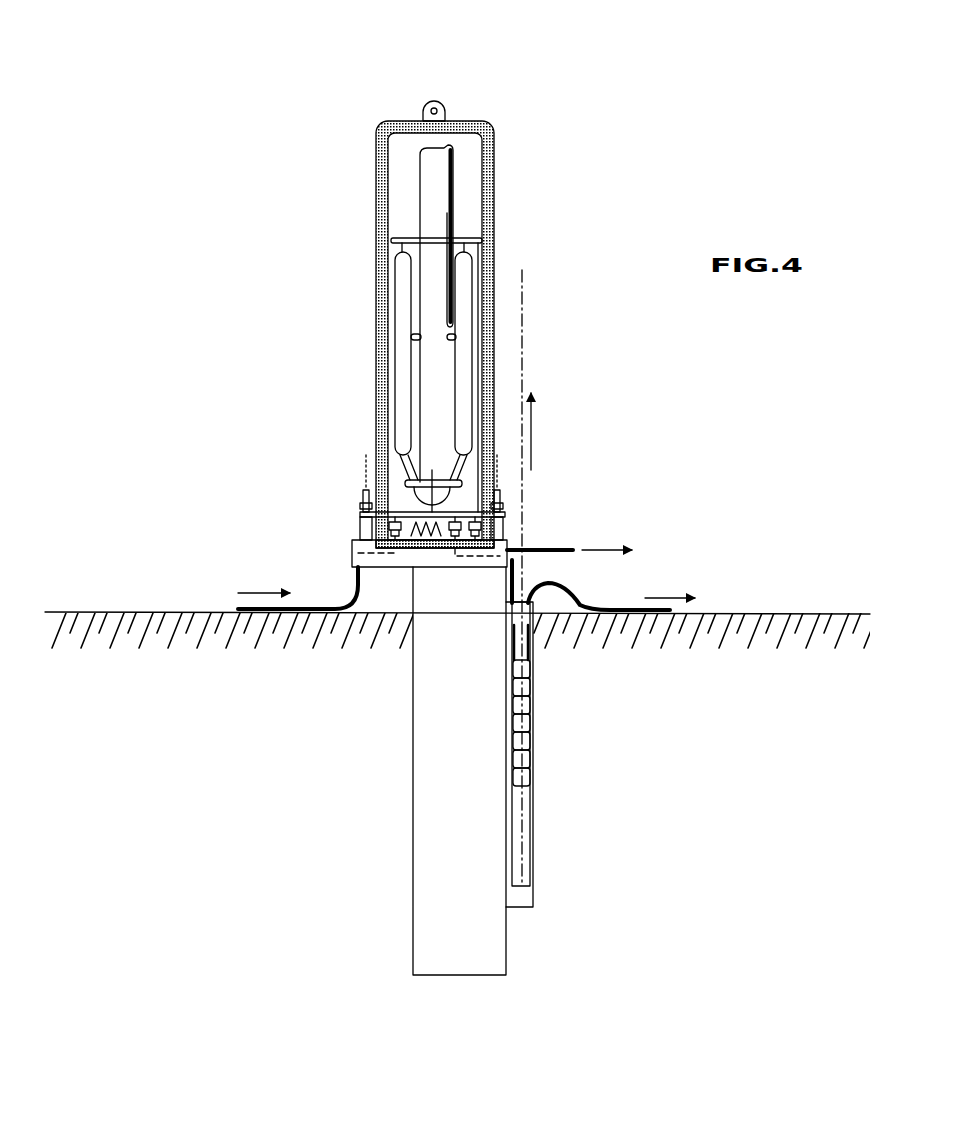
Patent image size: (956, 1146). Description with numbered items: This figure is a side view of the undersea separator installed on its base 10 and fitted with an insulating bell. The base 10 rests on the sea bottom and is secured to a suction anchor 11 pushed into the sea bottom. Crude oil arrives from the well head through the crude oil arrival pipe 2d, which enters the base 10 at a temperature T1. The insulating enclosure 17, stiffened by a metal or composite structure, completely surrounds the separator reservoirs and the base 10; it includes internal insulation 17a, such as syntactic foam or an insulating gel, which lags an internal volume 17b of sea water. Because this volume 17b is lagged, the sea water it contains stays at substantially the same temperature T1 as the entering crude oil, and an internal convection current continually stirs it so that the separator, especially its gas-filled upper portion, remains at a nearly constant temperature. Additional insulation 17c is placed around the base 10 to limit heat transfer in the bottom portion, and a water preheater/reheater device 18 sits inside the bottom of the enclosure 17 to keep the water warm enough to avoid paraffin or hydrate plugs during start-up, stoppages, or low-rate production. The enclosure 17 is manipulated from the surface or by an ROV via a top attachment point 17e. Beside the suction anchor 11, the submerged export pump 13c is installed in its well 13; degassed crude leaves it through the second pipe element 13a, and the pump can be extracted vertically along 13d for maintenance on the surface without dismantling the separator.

The base 10 is at (507, 548).
The suction anchor 11 is at (430, 748).
The well 13 is at (533, 775).
The second pipe element 13a is at (612, 608).
The submerged export pump 13c is at (528, 715).
The vertical extraction direction 13d is at (522, 346).
The insulating enclosure 17 is at (496, 294).
The internal insulation 17a is at (482, 243).
The internal volume 17b is at (470, 210).
The additional insulation 17c is at (500, 513).
The top attachment point 17e is at (432, 103).
The water preheater/reheater device 18 is at (430, 527).
The crude oil arrival pipe 2d is at (262, 606).
The temperature T1 is at (468, 165).